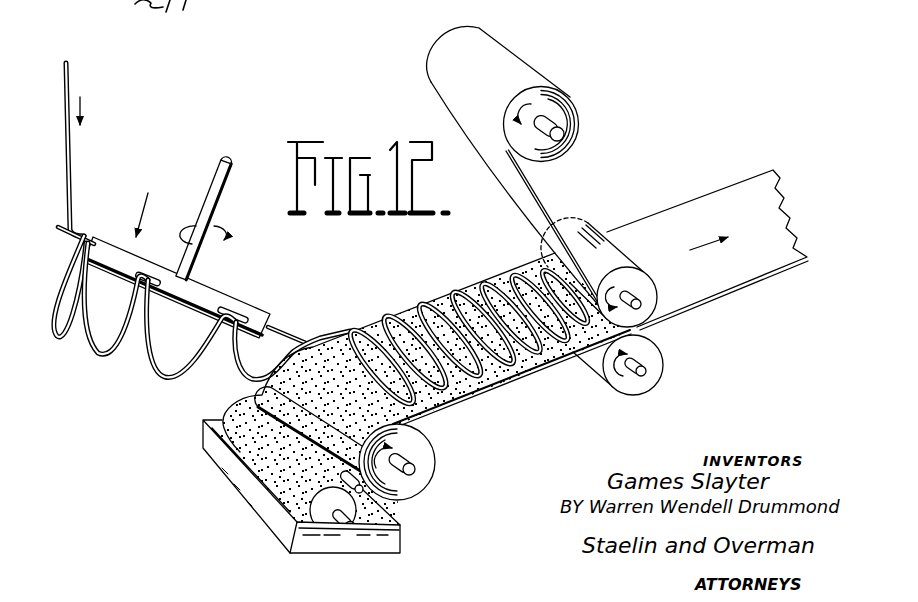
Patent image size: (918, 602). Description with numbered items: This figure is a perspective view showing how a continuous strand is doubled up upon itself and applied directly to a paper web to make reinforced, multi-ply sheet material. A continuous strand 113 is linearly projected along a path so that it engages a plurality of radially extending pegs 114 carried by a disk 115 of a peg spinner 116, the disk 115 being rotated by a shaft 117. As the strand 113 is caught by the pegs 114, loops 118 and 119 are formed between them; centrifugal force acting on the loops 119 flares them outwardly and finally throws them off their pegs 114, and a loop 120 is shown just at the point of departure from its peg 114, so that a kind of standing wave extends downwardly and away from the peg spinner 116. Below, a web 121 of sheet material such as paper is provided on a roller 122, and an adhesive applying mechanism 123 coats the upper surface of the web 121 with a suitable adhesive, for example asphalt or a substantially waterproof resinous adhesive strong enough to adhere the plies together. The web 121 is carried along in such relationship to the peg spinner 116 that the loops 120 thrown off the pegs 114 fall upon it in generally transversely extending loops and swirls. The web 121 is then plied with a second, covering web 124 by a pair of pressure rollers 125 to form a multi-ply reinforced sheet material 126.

The continuous strand 113 is at (94, 149).
The pegs 114 is at (189, 285).
The disk 115 is at (177, 287).
The peg spinner 116 is at (138, 206).
The shaft 117 is at (221, 218).
The loops 118 is at (58, 304).
The loops 119 is at (158, 326).
The loop 120 is at (277, 361).
The web 121 is at (421, 390).
The roller 122 is at (367, 460).
The adhesive applying mechanism 123 is at (332, 486).
The covering web 124 is at (514, 166).
The pressure rollers 125 is at (641, 306).
The multi-ply reinforced sheet material 126 is at (713, 250).